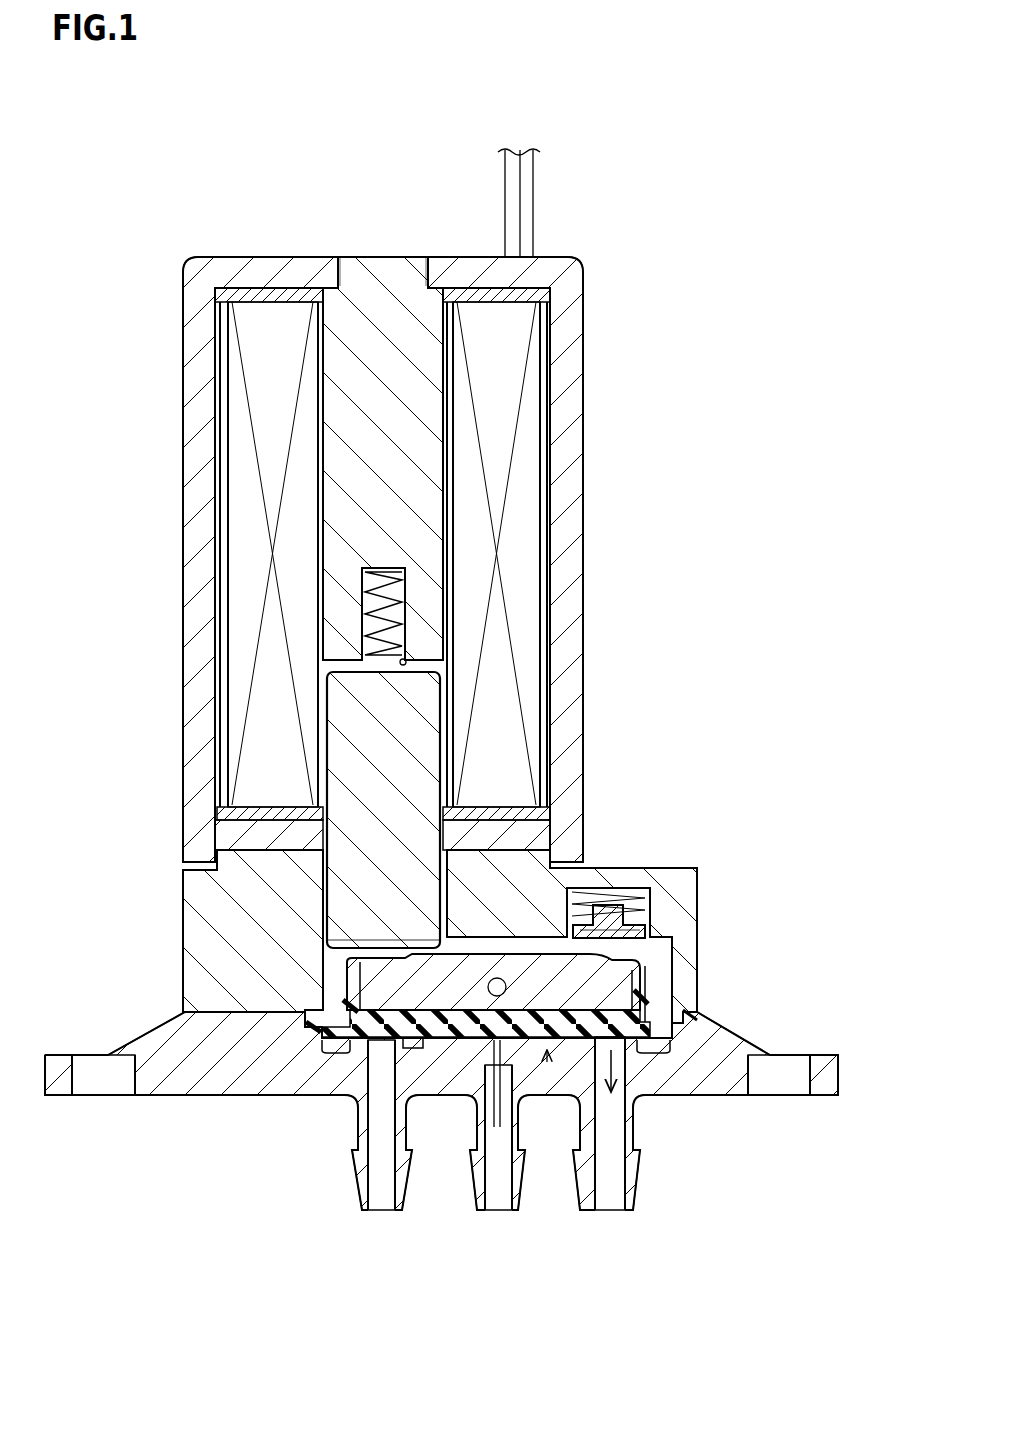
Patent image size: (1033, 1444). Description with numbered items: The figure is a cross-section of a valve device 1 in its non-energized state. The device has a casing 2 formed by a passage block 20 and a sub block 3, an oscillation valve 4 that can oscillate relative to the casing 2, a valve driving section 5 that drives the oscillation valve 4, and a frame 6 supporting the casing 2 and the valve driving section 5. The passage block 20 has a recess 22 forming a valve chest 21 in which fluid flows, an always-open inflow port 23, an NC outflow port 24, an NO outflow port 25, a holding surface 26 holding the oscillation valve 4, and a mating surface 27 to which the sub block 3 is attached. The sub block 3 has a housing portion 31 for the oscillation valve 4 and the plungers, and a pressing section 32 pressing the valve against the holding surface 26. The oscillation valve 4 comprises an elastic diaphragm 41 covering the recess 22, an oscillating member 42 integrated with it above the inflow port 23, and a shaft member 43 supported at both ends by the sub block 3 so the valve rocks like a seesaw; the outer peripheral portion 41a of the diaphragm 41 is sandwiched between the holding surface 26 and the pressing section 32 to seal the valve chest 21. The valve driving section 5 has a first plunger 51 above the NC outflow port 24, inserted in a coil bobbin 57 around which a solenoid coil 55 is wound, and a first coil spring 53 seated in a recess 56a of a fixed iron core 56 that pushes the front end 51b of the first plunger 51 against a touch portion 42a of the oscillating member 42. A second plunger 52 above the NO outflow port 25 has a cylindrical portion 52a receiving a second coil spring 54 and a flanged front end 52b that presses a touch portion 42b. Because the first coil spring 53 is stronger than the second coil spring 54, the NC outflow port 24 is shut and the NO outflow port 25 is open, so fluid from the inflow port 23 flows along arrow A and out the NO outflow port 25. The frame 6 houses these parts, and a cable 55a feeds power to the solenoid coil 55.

The valve device 1 is at (693, 185).
The casing 2 is at (165, 1005).
The sub block 3 is at (235, 893).
The oscillation valve 4 is at (612, 975).
The valve driving section 5 is at (497, 710).
The frame 6 is at (567, 583).
The passage block 20 is at (237, 1058).
The valve chest 21 is at (497, 1125).
The recess 22 is at (547, 1062).
The inflow port 23 is at (503, 1188).
The NC outflow port 24 is at (382, 1195).
The NO outflow port 25 is at (612, 1190).
The holding surface 26 is at (290, 1030).
The mating surface 27 is at (187, 1012).
The housing portion 31 is at (660, 985).
The pressing section 32 is at (312, 1010).
The diaphragm 41 is at (678, 1030).
The outer peripheral portion 41a is at (318, 1025).
The oscillating member 42 is at (372, 1030).
The touch portion 42a is at (342, 965).
The touch portion 42b is at (640, 962).
The shaft member 43 is at (473, 1050).
The first plunger 51 is at (352, 753).
The front end 51b is at (378, 937).
The second plunger 52 is at (608, 898).
The cylindrical portion 52a is at (638, 925).
The front end 52b is at (585, 905).
The first coil spring 53 is at (363, 570).
The second coil spring 54 is at (625, 910).
The solenoid coil 55 is at (272, 440).
The cable 55a is at (530, 170).
The fixed iron core 56 is at (355, 377).
The recess 56a is at (362, 602).
The coil bobbin 57 is at (435, 400).
The arrow A is at (615, 1062).